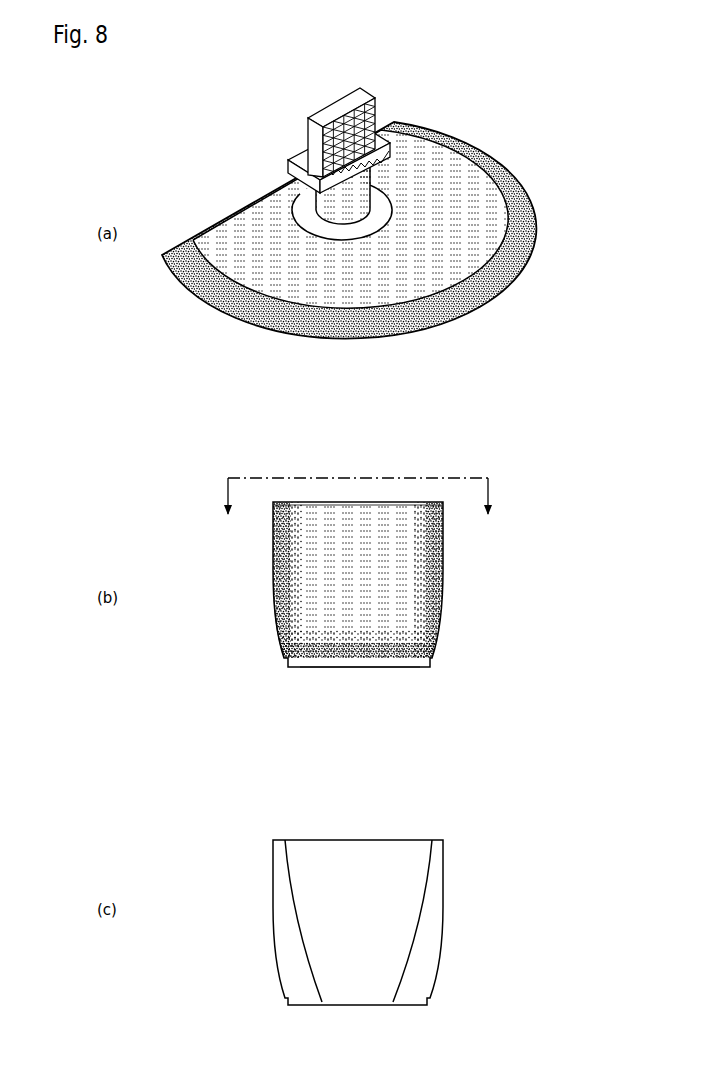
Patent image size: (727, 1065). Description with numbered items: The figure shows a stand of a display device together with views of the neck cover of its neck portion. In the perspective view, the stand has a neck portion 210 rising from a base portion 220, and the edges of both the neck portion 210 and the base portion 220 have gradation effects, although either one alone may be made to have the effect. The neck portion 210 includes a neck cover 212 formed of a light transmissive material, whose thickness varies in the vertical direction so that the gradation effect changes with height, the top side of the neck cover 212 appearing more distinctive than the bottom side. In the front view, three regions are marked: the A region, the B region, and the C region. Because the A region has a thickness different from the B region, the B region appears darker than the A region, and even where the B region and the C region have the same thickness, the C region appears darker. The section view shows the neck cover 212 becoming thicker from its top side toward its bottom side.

The neck portion 210 is at (304, 204).
The neck cover 212 is at (443, 553).
The base portion 220 is at (536, 248).
The A region A is at (354, 588).
The B region B is at (358, 645).
The C region C is at (284, 647).